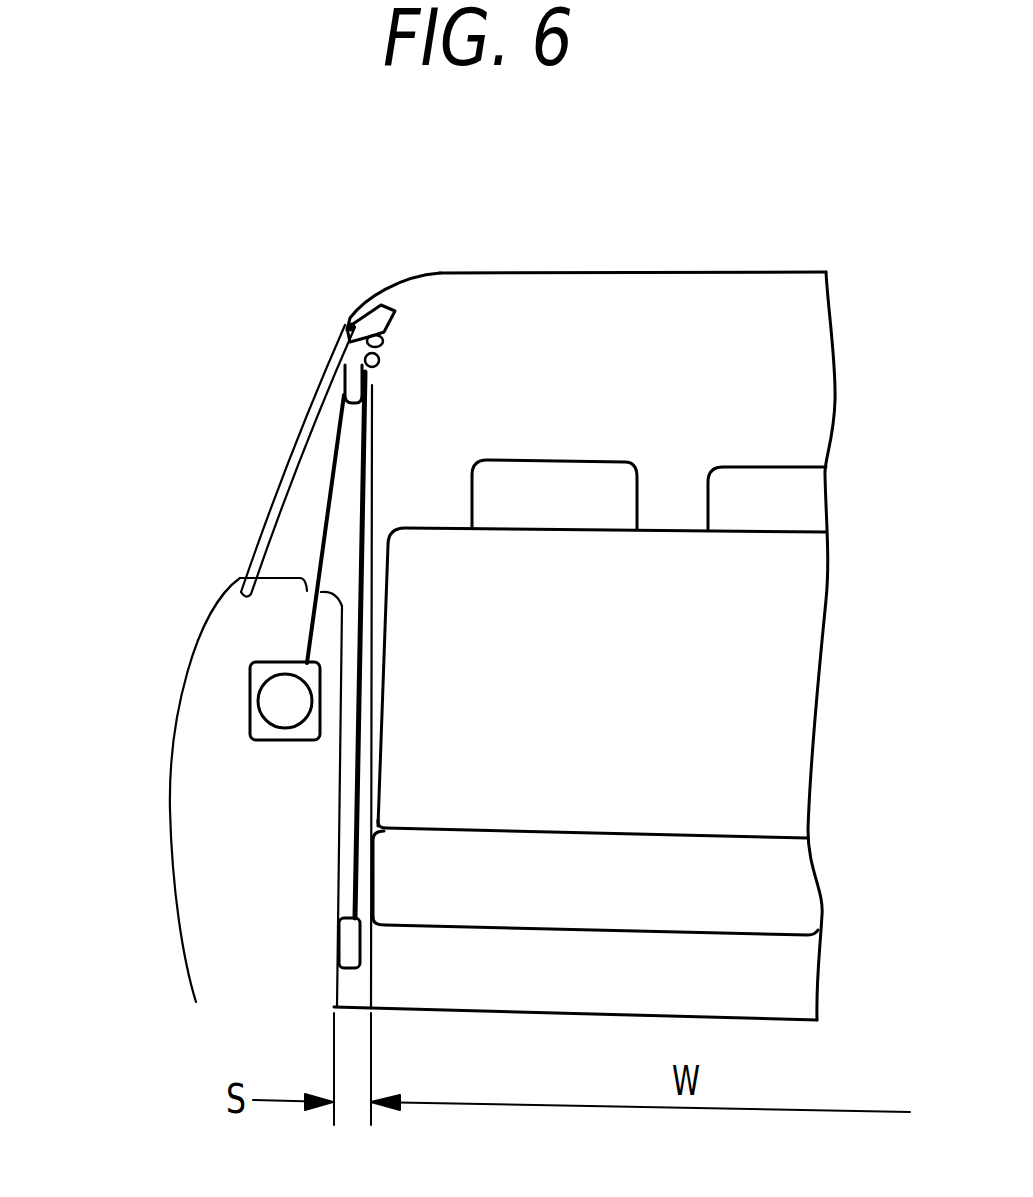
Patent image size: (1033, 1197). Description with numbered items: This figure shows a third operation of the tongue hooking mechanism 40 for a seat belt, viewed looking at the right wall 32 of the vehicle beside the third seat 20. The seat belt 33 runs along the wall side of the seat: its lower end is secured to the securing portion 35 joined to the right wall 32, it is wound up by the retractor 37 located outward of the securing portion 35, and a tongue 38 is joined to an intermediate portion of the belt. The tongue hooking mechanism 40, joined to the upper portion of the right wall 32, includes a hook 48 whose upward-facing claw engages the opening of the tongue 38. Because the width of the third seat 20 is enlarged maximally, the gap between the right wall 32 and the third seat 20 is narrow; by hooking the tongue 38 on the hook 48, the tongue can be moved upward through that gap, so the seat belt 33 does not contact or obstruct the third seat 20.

The third seat 20 is at (565, 572).
The right wall 32 is at (352, 776).
The seat belt 33 is at (323, 508).
The securing portion 35 is at (352, 938).
The retractor 37 is at (250, 700).
The tongue 38 is at (348, 370).
The tongue hooking mechanism 40 is at (407, 376).
The hook 48 is at (385, 350).